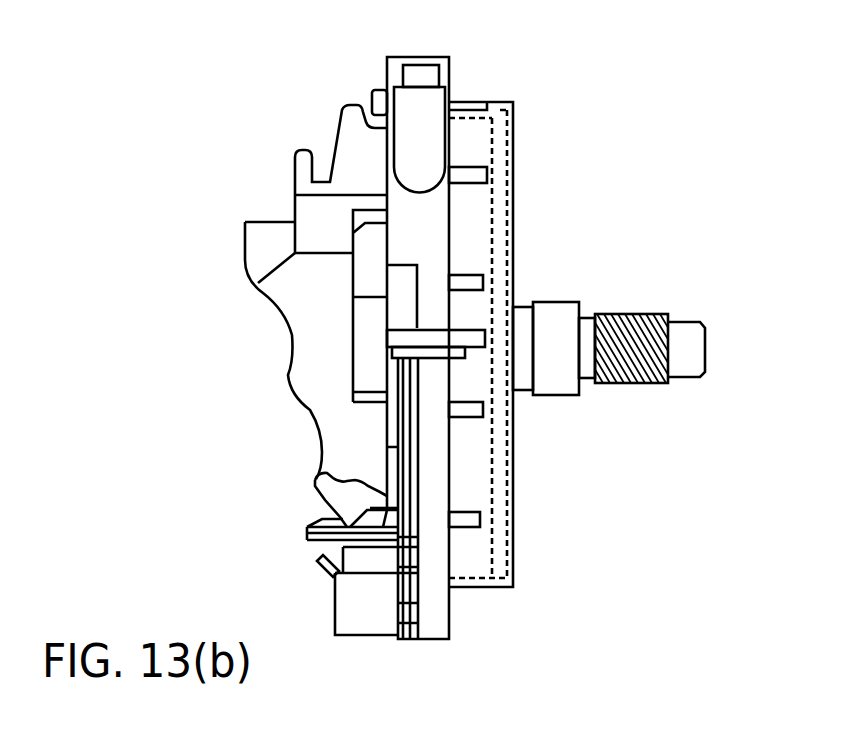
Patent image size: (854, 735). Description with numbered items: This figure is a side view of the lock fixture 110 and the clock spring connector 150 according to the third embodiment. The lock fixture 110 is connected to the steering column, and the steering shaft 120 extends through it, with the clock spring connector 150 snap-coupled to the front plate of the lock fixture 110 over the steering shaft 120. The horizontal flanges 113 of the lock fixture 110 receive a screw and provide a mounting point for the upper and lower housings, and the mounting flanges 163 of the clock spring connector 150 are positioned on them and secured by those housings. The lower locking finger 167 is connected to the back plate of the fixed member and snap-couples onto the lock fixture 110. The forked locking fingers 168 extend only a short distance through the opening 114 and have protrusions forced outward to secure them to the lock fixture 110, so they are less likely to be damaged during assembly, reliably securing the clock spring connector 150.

The lock fixture 110 is at (253, 198).
The horizontal flanges 113 is at (470, 337).
The opening 114 is at (385, 90).
The steering shaft 120 is at (658, 316).
The clock spring connector 150 is at (492, 250).
The mounting flanges 163 is at (465, 358).
The lower locking finger 167 is at (318, 520).
The forked locking fingers 168 is at (371, 98).